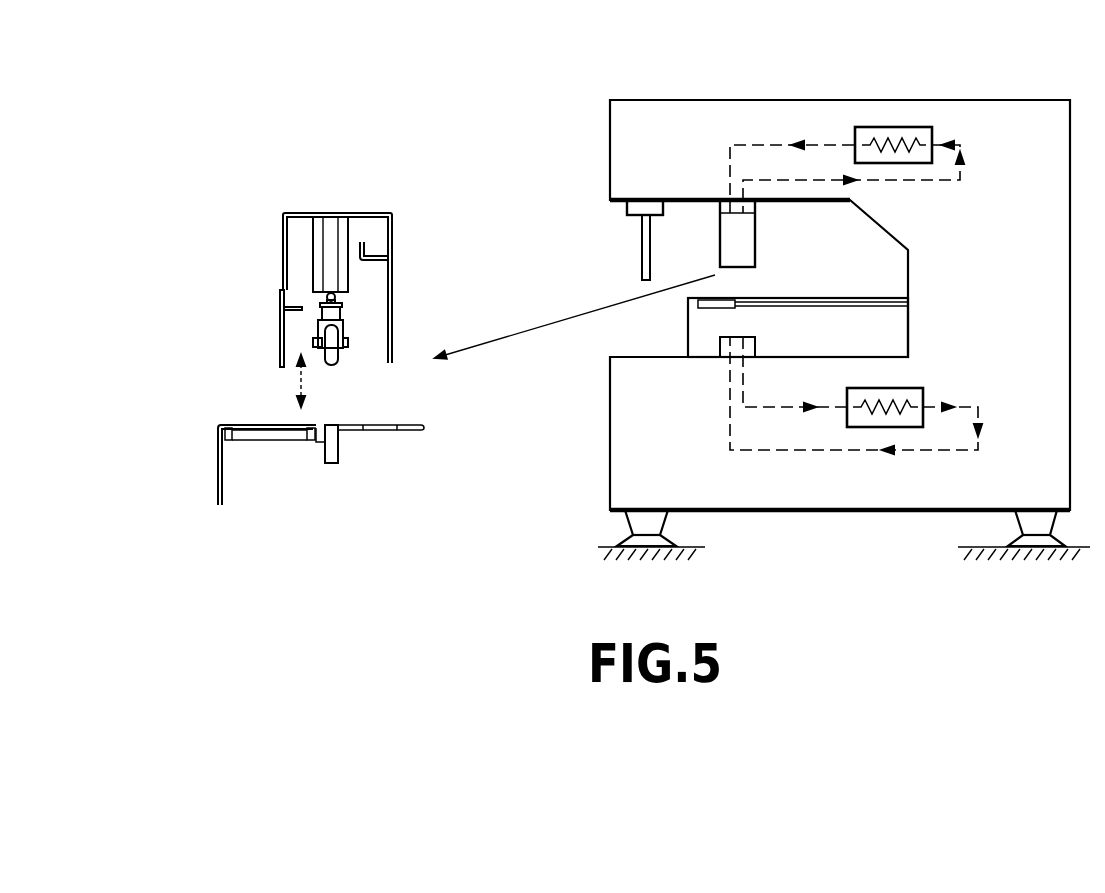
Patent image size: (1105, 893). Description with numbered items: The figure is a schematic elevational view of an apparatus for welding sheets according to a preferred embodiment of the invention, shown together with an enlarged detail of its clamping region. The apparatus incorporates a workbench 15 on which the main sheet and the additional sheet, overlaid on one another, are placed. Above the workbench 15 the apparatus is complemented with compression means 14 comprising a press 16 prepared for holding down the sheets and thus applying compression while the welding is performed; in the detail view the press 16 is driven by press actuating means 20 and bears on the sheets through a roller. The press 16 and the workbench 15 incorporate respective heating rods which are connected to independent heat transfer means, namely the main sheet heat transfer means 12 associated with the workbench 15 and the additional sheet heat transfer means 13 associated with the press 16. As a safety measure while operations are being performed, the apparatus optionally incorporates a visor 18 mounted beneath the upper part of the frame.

The main sheet heat transfer means 12 is at (907, 385).
The additional sheet heat transfer means 13 is at (902, 120).
The compression means 14 is at (715, 228).
The workbench 15 is at (798, 297).
The press 16 is at (343, 365).
The visor 18 is at (643, 248).
The press actuating means 20 is at (332, 237).